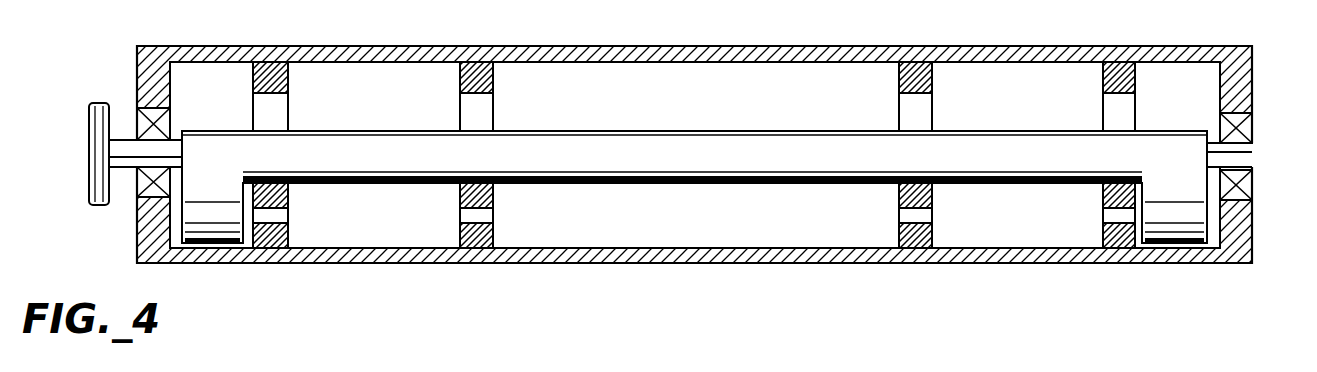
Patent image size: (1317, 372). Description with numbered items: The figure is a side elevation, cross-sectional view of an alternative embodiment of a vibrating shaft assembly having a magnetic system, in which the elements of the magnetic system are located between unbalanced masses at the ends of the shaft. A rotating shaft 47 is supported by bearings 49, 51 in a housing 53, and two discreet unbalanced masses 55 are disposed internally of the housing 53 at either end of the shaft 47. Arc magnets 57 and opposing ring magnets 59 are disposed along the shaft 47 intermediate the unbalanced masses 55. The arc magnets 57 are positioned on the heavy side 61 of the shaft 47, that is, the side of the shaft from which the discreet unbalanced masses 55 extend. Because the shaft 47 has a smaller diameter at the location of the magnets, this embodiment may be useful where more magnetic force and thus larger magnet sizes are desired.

The rotating shaft 47 is at (1057, 150).
The bearing 49 is at (141, 121).
The bearing 51 is at (1246, 185).
The housing 53 is at (993, 46).
The unbalanced masses 55 is at (207, 238).
The arc magnets 57 is at (289, 194).
The ring magnets 59 is at (289, 69).
The heavy side 61 is at (710, 166).